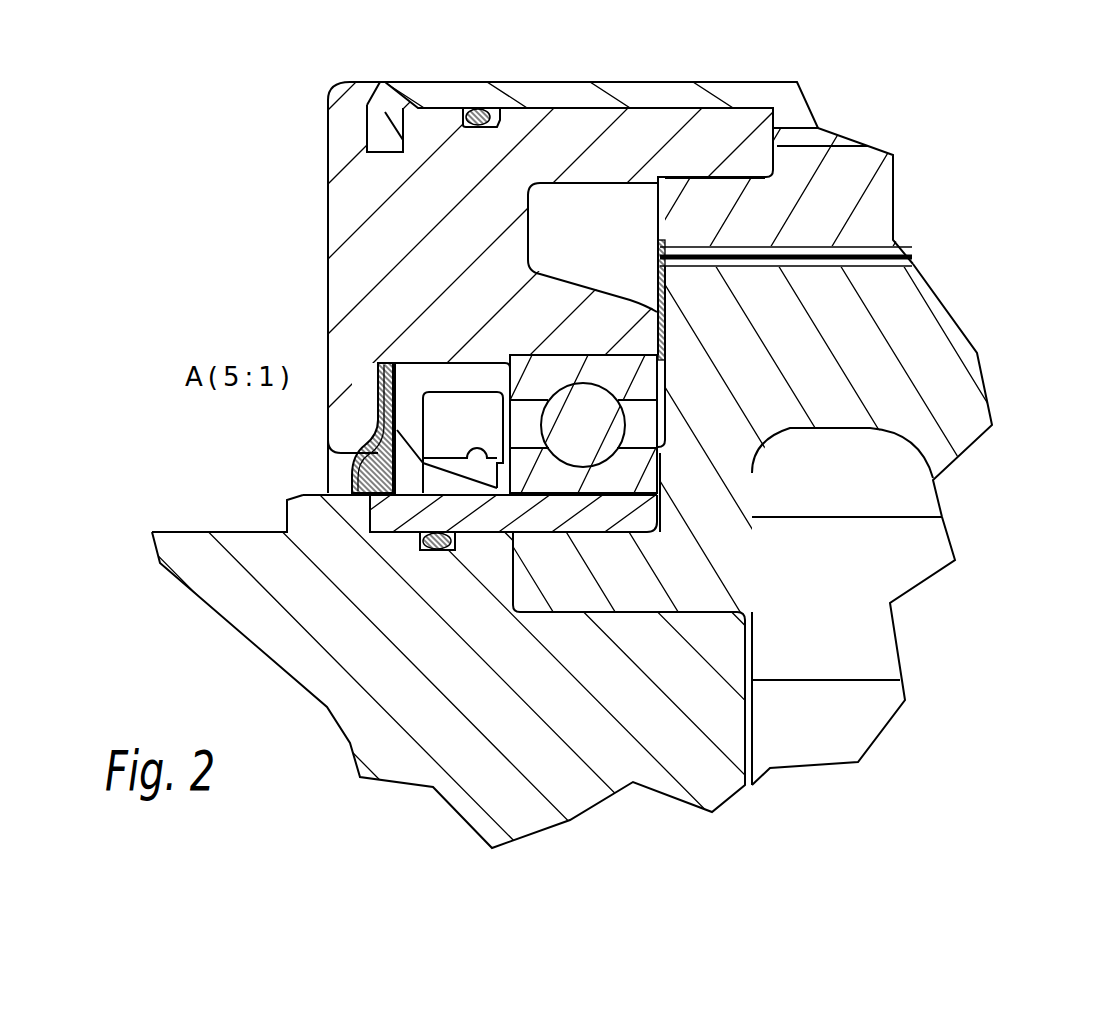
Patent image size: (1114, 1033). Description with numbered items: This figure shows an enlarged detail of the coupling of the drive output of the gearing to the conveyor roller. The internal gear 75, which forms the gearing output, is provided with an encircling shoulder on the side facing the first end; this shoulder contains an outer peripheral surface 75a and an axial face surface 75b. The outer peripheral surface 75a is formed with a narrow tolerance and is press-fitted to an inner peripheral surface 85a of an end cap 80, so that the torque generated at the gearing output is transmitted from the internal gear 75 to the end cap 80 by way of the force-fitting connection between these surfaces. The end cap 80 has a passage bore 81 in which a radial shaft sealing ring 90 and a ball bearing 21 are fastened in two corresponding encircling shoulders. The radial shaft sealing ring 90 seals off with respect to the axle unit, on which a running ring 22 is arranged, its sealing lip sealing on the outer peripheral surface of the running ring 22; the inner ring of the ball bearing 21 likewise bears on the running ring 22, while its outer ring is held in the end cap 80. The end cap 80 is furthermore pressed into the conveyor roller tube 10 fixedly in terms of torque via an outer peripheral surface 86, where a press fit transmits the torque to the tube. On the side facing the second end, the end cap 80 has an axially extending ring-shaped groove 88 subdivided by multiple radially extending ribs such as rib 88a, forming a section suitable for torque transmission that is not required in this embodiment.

The conveyor roller tube 10 is at (676, 92).
The ball bearing 21 is at (542, 376).
The running ring 22 is at (415, 512).
The internal gear 75 is at (847, 163).
The outer peripheral surface 75a is at (693, 166).
The axial face surface 75b is at (766, 163).
The end cap 80 is at (370, 225).
The passage bore 81 is at (343, 465).
The inner peripheral surface 85a is at (715, 190).
The outer peripheral surface 86 is at (536, 98).
The ring-shaped groove 88 is at (625, 254).
The radially extending rib 88a is at (600, 242).
The radial shaft sealing ring 90 is at (426, 387).